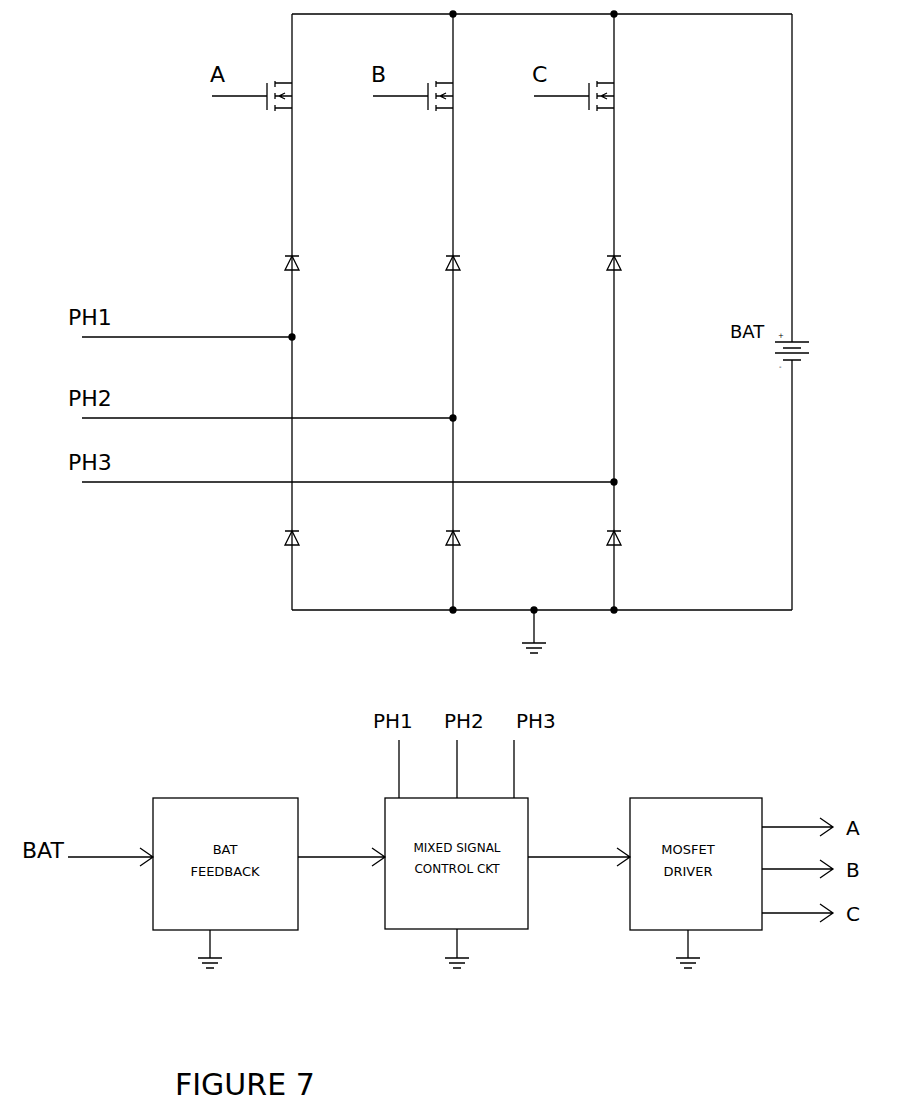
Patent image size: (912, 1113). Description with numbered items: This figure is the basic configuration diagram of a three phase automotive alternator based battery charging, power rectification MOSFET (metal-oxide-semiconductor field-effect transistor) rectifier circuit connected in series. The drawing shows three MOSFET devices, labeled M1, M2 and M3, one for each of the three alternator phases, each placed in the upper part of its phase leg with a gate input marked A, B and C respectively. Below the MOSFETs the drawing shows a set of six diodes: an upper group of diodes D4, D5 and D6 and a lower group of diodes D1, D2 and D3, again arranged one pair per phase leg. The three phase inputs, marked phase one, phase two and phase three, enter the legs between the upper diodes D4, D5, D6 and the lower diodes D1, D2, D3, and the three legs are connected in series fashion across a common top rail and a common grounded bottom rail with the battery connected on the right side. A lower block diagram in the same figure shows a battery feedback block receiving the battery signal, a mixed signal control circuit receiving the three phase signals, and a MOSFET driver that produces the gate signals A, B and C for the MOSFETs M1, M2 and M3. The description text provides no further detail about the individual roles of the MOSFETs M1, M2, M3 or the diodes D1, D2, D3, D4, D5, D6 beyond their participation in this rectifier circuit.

The MOSFET phase A M1 is at (268, 96).
The MOSFET phase B M2 is at (429, 96).
The MOSFET phase C M3 is at (590, 96).
The diode D1 is at (308, 538).
The diode D2 is at (469, 538).
The diode D3 is at (630, 538).
The diode D4 is at (308, 263).
The diode D5 is at (469, 263).
The diode D6 is at (630, 263).